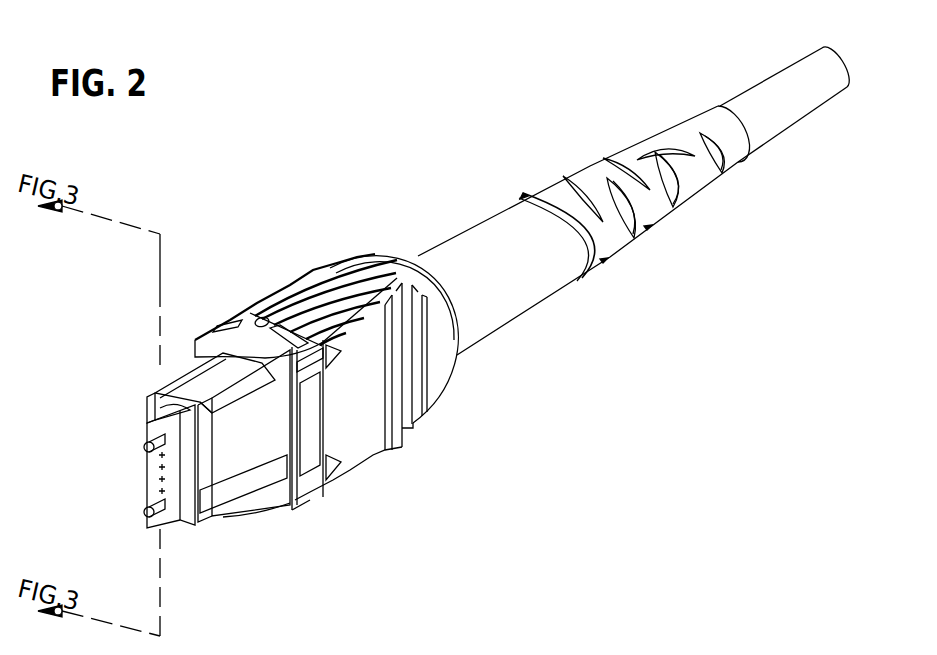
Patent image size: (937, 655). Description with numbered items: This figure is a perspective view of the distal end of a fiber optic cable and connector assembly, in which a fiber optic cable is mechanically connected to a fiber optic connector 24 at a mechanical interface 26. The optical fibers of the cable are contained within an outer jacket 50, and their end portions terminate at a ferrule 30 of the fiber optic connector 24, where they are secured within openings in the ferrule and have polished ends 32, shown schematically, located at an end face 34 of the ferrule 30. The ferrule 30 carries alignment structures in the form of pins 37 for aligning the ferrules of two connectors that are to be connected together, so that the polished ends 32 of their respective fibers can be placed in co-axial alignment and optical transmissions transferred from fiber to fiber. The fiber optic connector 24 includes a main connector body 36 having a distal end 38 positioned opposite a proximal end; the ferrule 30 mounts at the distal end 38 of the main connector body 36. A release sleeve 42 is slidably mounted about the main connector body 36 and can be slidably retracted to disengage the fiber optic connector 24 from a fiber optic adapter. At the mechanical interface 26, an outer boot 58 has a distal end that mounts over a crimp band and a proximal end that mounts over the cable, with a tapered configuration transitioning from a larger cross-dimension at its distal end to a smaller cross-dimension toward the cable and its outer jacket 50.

The fiber optic connector 24 is at (300, 267).
The mechanical interface 26 is at (460, 386).
The ferrule 30 is at (150, 490).
The polished ends 32 is at (157, 468).
The end face 34 is at (168, 507).
The main connector body 36 is at (313, 488).
The pins 37 is at (152, 443).
The distal end 38 is at (206, 518).
The release sleeve 42 is at (258, 304).
The outer jacket 50 is at (755, 78).
The outer boot 58 is at (478, 240).